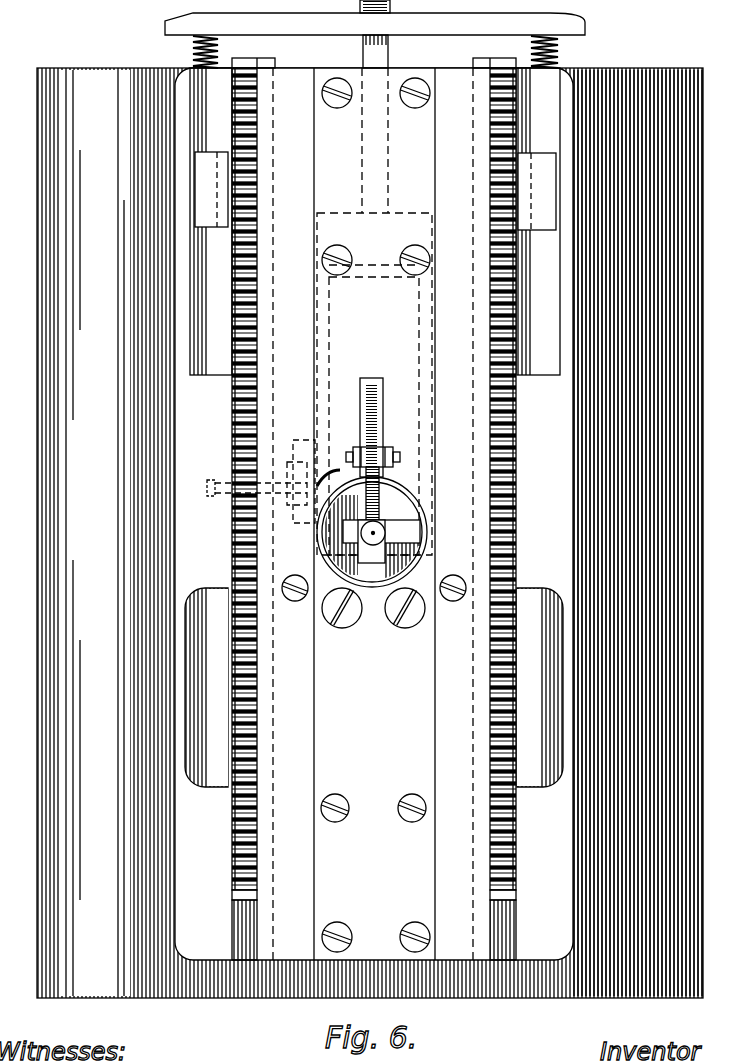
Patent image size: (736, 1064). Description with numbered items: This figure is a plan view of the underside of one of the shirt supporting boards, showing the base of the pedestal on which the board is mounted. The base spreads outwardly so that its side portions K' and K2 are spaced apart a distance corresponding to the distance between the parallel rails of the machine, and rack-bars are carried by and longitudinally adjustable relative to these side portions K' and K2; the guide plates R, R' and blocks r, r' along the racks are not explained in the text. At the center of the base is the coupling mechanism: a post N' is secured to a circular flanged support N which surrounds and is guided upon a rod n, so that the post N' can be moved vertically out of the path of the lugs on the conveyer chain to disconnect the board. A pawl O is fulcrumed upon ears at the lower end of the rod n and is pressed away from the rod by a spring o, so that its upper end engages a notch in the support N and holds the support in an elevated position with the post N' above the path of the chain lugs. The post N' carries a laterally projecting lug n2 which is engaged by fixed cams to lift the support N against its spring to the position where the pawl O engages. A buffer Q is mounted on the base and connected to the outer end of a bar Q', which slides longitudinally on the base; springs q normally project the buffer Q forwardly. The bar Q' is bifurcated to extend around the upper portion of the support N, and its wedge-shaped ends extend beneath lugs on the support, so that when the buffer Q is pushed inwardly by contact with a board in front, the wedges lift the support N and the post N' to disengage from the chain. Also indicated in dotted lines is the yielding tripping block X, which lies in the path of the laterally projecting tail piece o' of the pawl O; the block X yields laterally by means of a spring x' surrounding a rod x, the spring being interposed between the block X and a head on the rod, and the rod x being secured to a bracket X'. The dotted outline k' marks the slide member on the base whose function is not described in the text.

The side portion of the base K2 is at (181, 519).
The side portion of the base K' is at (630, 533).
The buffer Q is at (350, 31).
The bar Q' is at (396, 106).
The springs q is at (193, 52).
The left rack guide plate R is at (172, 221).
The left guide block r is at (169, 189).
The right rack guide plate R' is at (568, 221).
The right guide block r' is at (569, 191).
The slide dashed outline k' is at (395, 410).
The pawl O is at (388, 438).
The tail piece o' is at (364, 458).
The spring o is at (388, 487).
The circular flanged support N is at (390, 528).
The rod n is at (413, 505).
The laterally projecting lug n2 is at (420, 540).
The post N' is at (377, 599).
The rod x is at (245, 480).
The tripping block X is at (298, 459).
The bracket X' is at (289, 542).
The spring x' is at (209, 525).